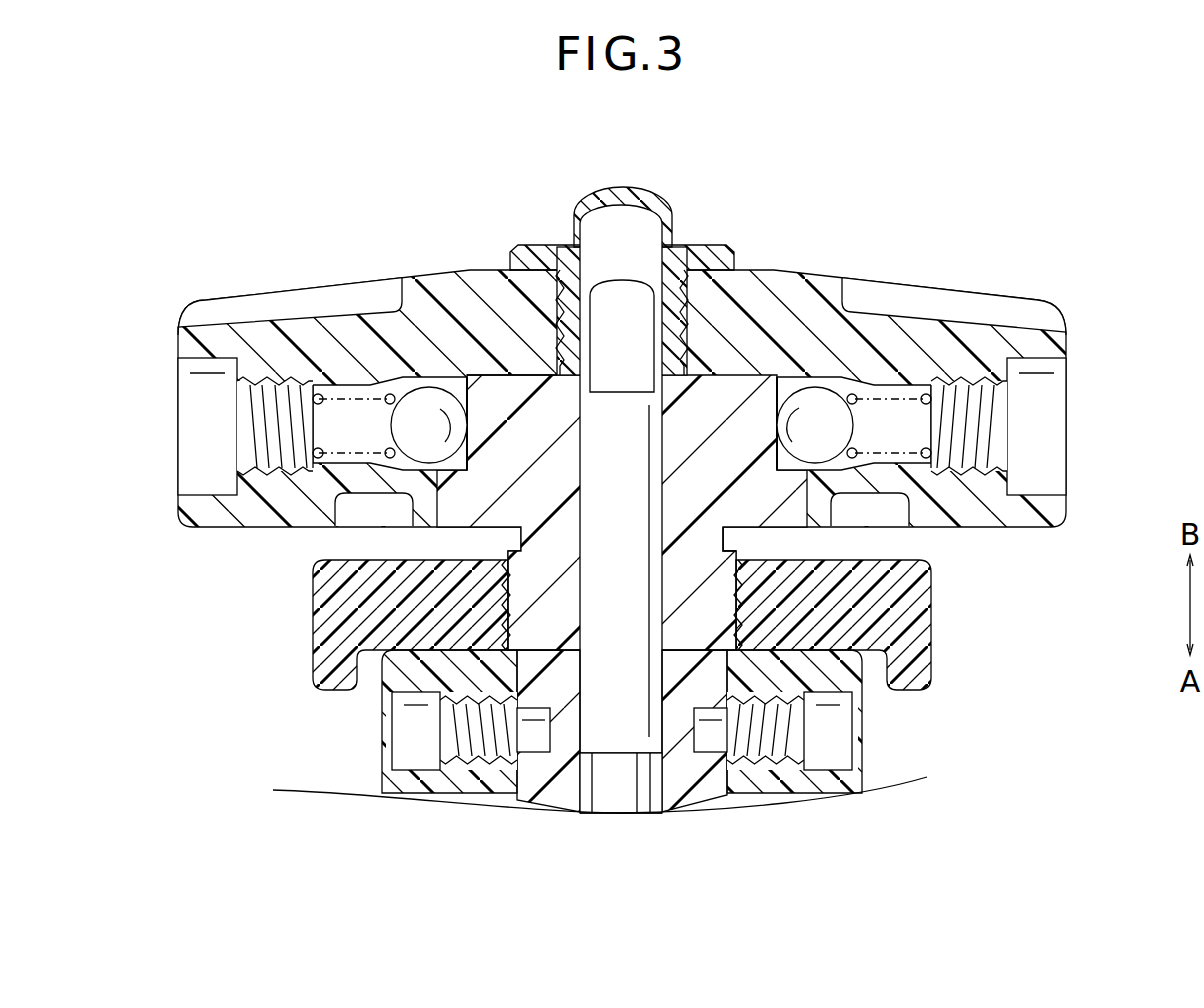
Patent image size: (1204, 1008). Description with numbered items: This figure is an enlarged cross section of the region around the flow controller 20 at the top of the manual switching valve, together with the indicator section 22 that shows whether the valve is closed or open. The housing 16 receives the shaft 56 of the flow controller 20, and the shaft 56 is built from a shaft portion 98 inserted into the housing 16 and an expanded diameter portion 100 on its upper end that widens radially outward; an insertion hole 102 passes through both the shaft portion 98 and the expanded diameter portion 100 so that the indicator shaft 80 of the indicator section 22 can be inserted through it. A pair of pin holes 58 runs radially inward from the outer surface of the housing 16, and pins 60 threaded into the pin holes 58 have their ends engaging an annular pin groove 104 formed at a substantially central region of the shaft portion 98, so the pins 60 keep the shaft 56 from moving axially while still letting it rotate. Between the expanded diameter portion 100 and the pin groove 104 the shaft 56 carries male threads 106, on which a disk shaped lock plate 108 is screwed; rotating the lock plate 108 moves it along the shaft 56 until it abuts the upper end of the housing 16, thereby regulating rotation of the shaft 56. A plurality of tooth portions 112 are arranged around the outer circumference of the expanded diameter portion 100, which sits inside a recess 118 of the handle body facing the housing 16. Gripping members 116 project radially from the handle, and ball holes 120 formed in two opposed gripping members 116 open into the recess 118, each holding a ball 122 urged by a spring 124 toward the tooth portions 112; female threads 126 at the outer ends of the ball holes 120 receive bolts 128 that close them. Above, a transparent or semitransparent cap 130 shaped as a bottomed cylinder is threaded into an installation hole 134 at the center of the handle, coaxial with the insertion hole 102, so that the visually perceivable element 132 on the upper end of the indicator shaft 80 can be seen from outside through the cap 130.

The flow controller 20 is at (888, 213).
The indicator section 22 is at (586, 183).
The housing 16 is at (442, 787).
The shaft 56 is at (706, 567).
The pin holes 58 is at (452, 748).
The pins 60 is at (403, 723).
The indicator shaft 80 is at (620, 797).
The shaft portion 98 is at (678, 802).
The expanded diameter portion 100 is at (743, 393).
The insertion hole 102 is at (663, 493).
The pin groove 104 is at (547, 782).
The male threads 106 is at (507, 612).
The lock plate 108 is at (925, 612).
The tooth portions 112 is at (455, 387).
The gripping members 116 is at (257, 343).
The recess 118 is at (500, 387).
The ball holes 120 is at (337, 393).
The balls 122 is at (422, 410).
The springs 124 is at (313, 418).
The female threads 126 is at (250, 448).
The bolts 128 is at (195, 386).
The cap 130 is at (617, 187).
The visually perceivable element 132 is at (622, 290).
The installation hole 134 is at (670, 283).